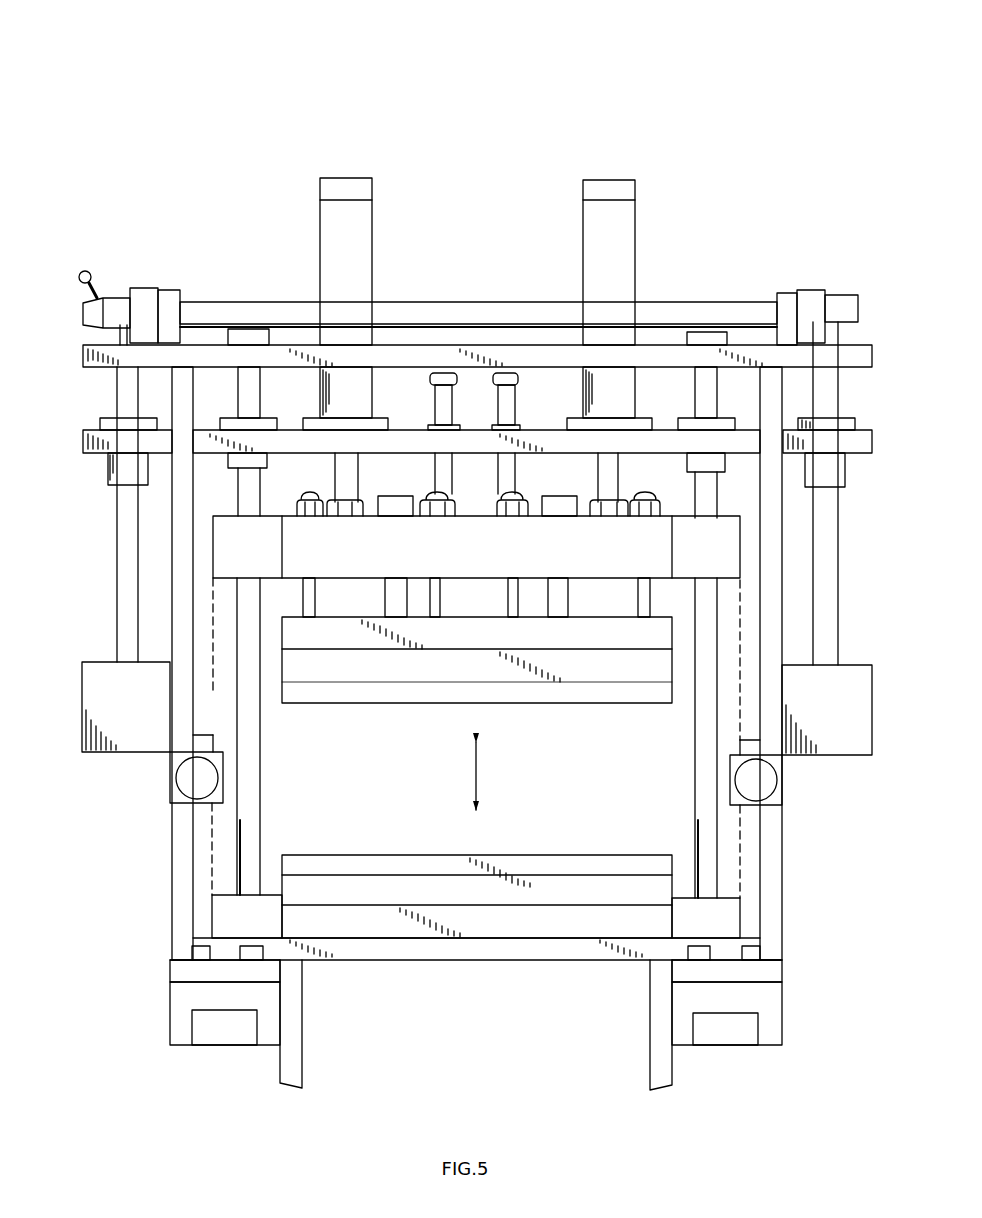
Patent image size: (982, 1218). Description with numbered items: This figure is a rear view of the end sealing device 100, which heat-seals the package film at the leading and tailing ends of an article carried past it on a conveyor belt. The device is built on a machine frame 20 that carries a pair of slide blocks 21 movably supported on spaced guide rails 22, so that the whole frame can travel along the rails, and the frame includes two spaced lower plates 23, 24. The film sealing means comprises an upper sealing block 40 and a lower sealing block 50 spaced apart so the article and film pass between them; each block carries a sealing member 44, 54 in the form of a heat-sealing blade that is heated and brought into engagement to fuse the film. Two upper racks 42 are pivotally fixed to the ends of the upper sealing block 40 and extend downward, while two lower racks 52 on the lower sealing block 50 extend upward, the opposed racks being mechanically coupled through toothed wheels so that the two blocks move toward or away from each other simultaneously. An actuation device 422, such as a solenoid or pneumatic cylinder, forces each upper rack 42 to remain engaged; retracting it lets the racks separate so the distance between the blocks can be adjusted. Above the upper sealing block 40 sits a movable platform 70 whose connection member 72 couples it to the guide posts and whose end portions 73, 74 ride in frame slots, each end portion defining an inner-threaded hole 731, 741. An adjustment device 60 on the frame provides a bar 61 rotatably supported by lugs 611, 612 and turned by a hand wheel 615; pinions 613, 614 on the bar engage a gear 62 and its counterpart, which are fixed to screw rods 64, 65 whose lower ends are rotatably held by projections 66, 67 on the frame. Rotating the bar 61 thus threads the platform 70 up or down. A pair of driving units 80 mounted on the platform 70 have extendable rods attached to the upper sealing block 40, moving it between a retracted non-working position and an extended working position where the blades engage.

The end sealing device 100 is at (468, 110).
The machine frame 20 is at (482, 348).
The slide blocks 21 is at (192, 965).
The guide rails 22 is at (208, 1020).
The lower plate 23 is at (290, 1015).
The lower plate 24 is at (660, 1012).
The upper sealing block 40 is at (585, 565).
The upper racks 42 is at (205, 625).
The actuation device 422 is at (185, 780).
The sealing member 44 is at (372, 695).
The lower sealing block 50 is at (230, 913).
The lower racks 52 is at (205, 862).
The sealing member 54 is at (523, 862).
The adjustment device 60 is at (132, 222).
The bar 61 is at (252, 312).
The lug 611 is at (786, 298).
The lug 612 is at (170, 302).
The pinion 613 is at (810, 300).
The pinion 614 is at (145, 296).
The hand wheel 615 is at (100, 312).
The gear 62 is at (842, 305).
The screw rod 64 is at (832, 383).
The screw rod 65 is at (118, 528).
The projection 66 is at (862, 702).
The projection 67 is at (110, 702).
The movable platform 70 is at (738, 450).
The connection member 72 is at (722, 422).
The end portion 73 is at (866, 443).
The inner-threaded hole 731 is at (846, 426).
The end portion 74 is at (88, 443).
The inner-threaded hole 741 is at (117, 418).
The driving unit 80 is at (344, 188).